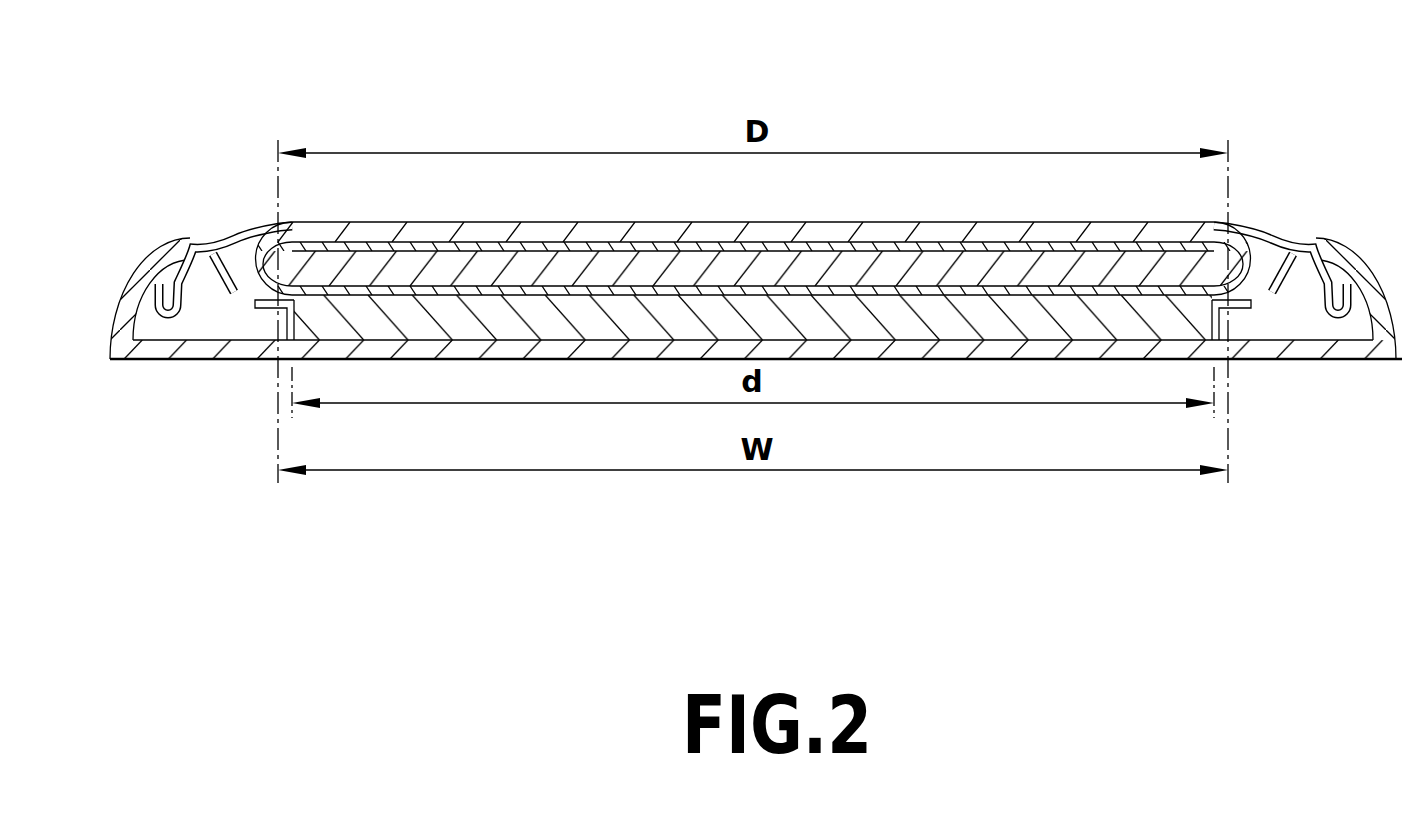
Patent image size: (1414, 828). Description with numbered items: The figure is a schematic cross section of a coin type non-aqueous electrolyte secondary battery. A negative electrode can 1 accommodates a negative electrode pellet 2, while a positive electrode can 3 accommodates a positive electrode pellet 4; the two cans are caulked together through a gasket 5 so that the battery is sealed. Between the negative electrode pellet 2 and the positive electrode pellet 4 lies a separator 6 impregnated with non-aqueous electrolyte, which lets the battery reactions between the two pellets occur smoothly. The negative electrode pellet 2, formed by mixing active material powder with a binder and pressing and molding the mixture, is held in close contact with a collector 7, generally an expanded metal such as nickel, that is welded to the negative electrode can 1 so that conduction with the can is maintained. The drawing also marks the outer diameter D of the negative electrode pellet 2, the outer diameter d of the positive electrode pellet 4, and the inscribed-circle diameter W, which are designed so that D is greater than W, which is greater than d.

The negative electrode can 1 is at (487, 222).
The negative electrode pellet 2 is at (935, 265).
The positive electrode can 3 is at (1085, 350).
The positive electrode pellet 4 is at (555, 315).
The gasket 5 is at (167, 322).
The separator 6 is at (957, 292).
The collector 7 is at (1110, 247).